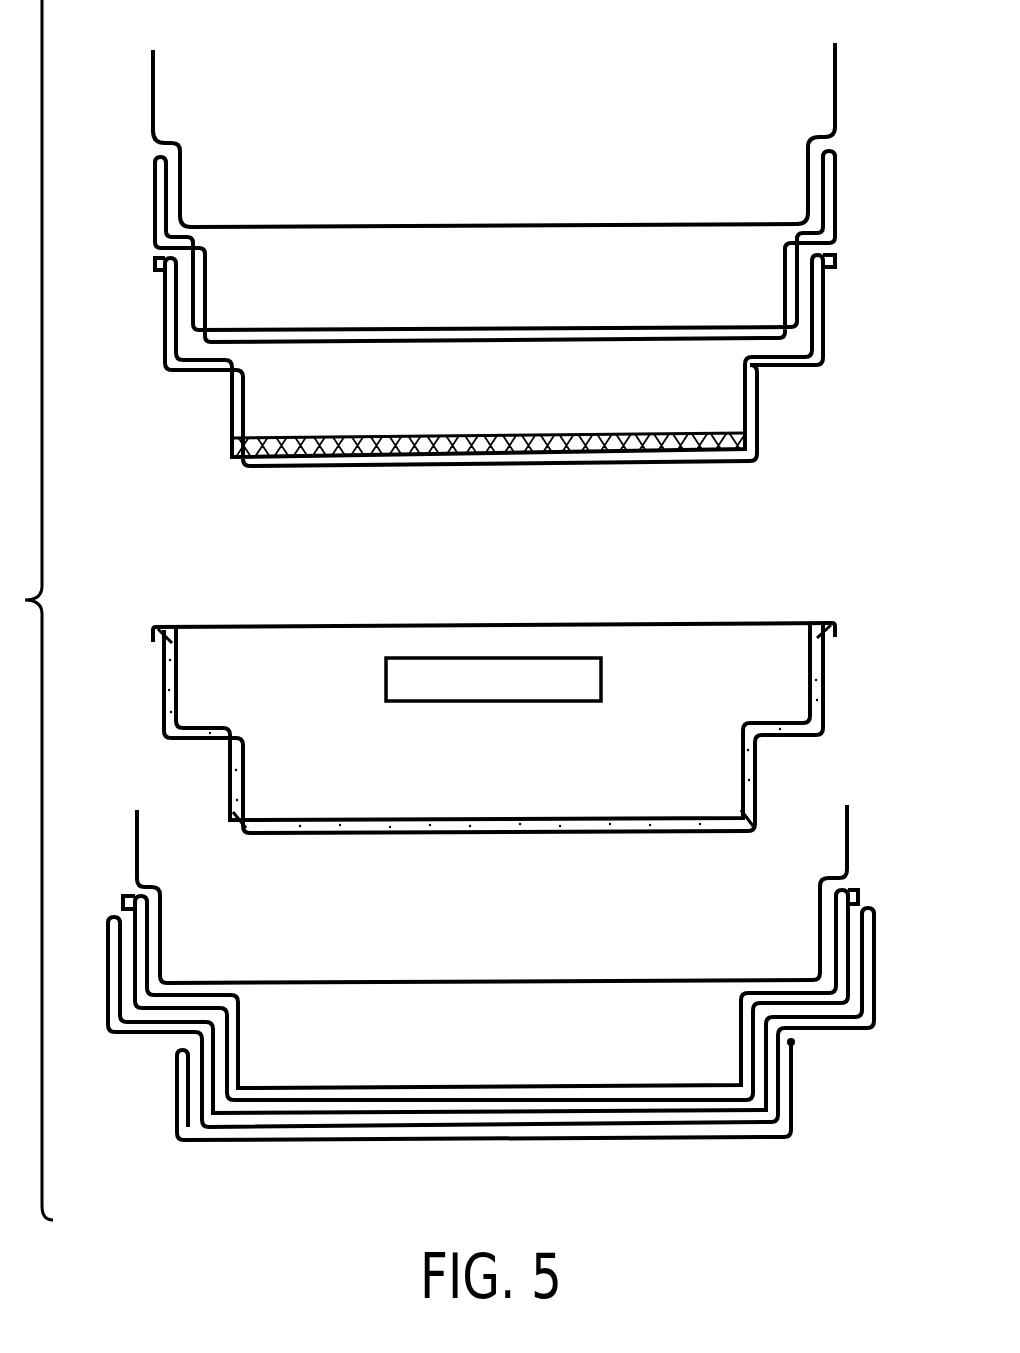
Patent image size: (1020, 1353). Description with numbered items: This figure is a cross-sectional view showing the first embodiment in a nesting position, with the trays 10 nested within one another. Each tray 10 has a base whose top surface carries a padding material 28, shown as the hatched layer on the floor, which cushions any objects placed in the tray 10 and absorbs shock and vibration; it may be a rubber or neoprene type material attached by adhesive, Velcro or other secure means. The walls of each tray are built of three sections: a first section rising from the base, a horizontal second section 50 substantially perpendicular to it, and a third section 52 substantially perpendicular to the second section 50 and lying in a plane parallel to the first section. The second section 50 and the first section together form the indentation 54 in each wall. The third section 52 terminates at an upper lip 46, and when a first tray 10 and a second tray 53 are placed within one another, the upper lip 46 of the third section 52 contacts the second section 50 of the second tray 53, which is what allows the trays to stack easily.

The tray 10 is at (823, 364).
The padding material 28 is at (623, 452).
The upper lip 46 is at (837, 257).
The second section 50 is at (200, 374).
The third section 52 is at (525, 360).
The second tray 53 is at (837, 176).
The indentation 54 is at (796, 367).